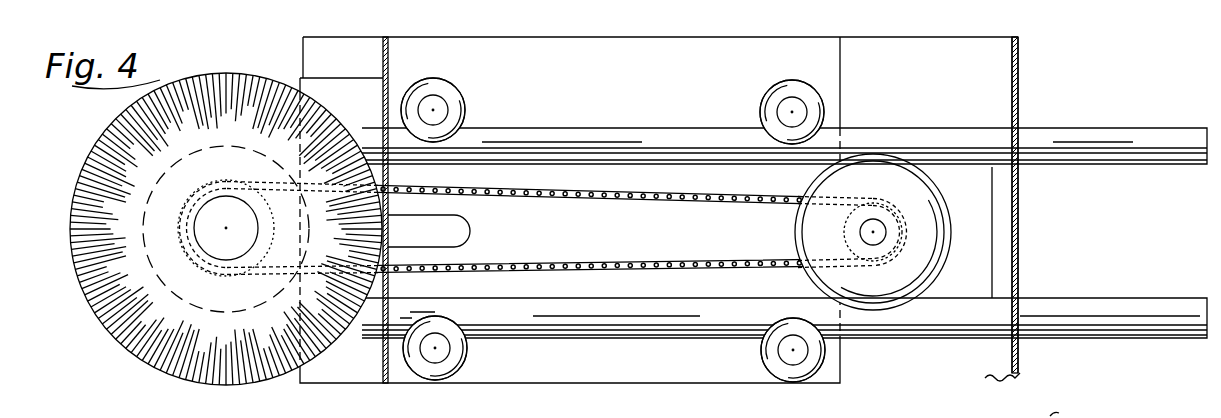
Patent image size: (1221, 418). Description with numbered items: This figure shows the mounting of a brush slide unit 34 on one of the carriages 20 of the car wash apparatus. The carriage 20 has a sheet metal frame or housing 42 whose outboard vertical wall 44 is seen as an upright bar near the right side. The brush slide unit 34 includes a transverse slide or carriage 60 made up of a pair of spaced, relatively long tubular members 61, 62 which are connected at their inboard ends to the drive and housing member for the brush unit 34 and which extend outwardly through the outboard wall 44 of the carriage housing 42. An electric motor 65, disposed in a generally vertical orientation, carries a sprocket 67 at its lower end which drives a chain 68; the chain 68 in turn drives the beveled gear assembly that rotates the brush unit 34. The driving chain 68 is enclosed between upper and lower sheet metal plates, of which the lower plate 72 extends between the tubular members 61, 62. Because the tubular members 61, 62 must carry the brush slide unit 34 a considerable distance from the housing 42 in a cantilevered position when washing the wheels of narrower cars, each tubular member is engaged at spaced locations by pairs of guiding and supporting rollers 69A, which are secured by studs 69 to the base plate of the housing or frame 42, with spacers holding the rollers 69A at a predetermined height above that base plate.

The carriage 20 is at (1026, 96).
The brush slide unit 34 is at (94, 158).
The sheet metal frame or housing 42 is at (1071, 408).
The outboard vertical wall 44 is at (1019, 235).
The transverse slide or carriage 60 is at (452, 386).
The tubular member 61 is at (546, 142).
The tubular member 62 is at (591, 318).
The motor 65 is at (905, 284).
The sprocket 67 is at (868, 208).
The chain 68 is at (536, 265).
The studs 69 is at (433, 105).
The guiding and supporting rollers 69A is at (466, 104).
The lower sheet metal plate 72 is at (723, 292).